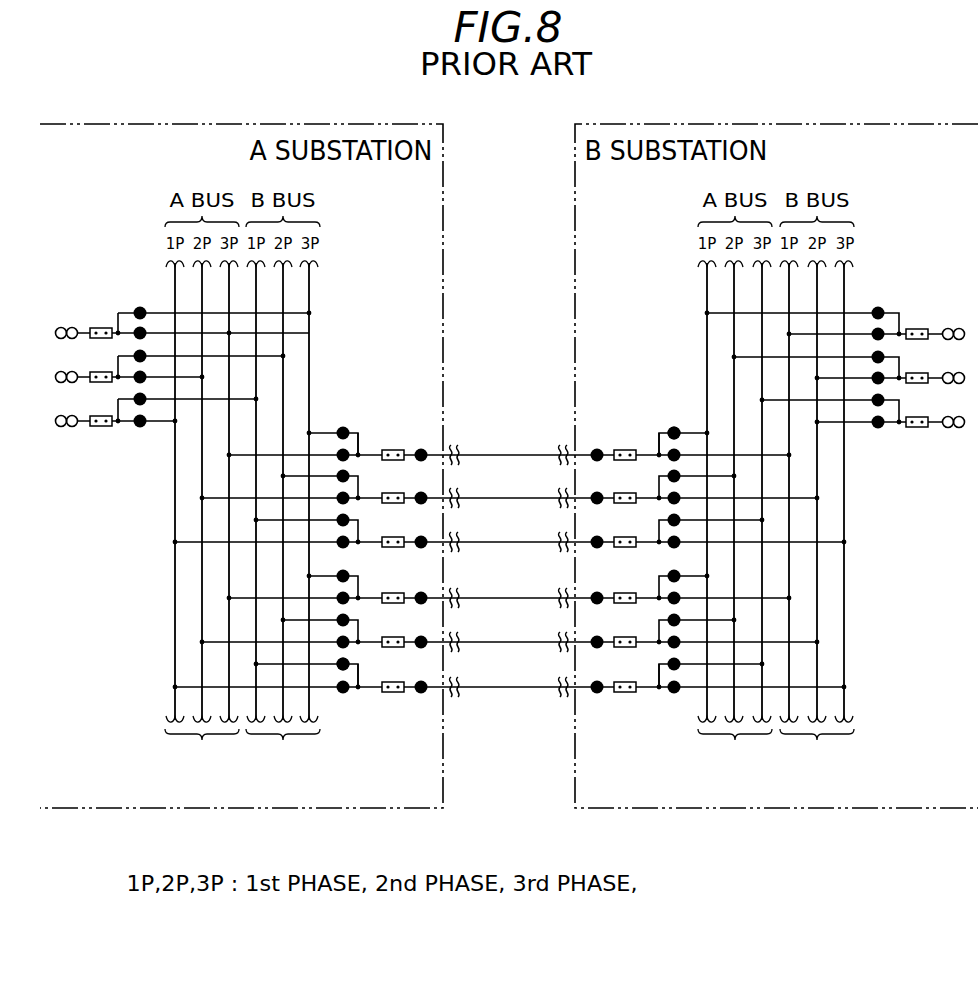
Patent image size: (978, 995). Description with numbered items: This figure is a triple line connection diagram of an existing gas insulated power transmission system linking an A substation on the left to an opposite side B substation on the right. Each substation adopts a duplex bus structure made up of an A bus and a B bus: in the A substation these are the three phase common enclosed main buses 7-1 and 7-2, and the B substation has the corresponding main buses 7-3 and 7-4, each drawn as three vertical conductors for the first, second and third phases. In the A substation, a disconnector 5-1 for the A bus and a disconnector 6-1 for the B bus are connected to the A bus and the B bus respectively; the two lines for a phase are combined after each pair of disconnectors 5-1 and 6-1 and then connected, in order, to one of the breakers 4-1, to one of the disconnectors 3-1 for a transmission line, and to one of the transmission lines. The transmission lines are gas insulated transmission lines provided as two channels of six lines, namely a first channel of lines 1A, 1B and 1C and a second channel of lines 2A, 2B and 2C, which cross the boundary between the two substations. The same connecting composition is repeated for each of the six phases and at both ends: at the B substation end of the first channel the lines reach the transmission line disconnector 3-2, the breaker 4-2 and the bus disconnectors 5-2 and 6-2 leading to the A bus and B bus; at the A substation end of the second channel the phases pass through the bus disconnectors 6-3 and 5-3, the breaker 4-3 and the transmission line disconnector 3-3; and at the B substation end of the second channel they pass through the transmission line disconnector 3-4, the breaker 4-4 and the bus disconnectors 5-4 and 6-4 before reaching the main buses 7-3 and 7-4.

The line 1A is at (470, 454).
The line 1B is at (495, 497).
The line 1C is at (530, 541).
The line 2A is at (481, 599).
The line 2B is at (508, 643).
The line 2C is at (540, 688).
The disconnector for a transmission line 3-1 is at (420, 448).
The disconnector for a transmission line 3-2 is at (598, 449).
The disconnector for a transmission line 3-3 is at (422, 693).
The disconnector for a transmission line 3-4 is at (597, 693).
The breaker 4-1 is at (385, 448).
The breaker 4-2 is at (629, 449).
The breaker 4-3 is at (392, 693).
The breaker 4-4 is at (628, 693).
The disconnector for the A bus 5-1 is at (348, 451).
The disconnector for the A bus 5-2 is at (675, 429).
The disconnector for the A bus 5-3 is at (352, 693).
The disconnector for the A bus 5-4 is at (682, 670).
The disconnector for the B bus 6-1 is at (343, 429).
The disconnector for the B bus 6-2 is at (672, 452).
The disconnector for the B bus 6-3 is at (340, 689).
The disconnector for the B bus 6-4 is at (670, 693).
The main bus 7-1 is at (202, 742).
The main bus 7-2 is at (283, 742).
The main bus 7-3 is at (736, 742).
The main bus 7-4 is at (818, 742).